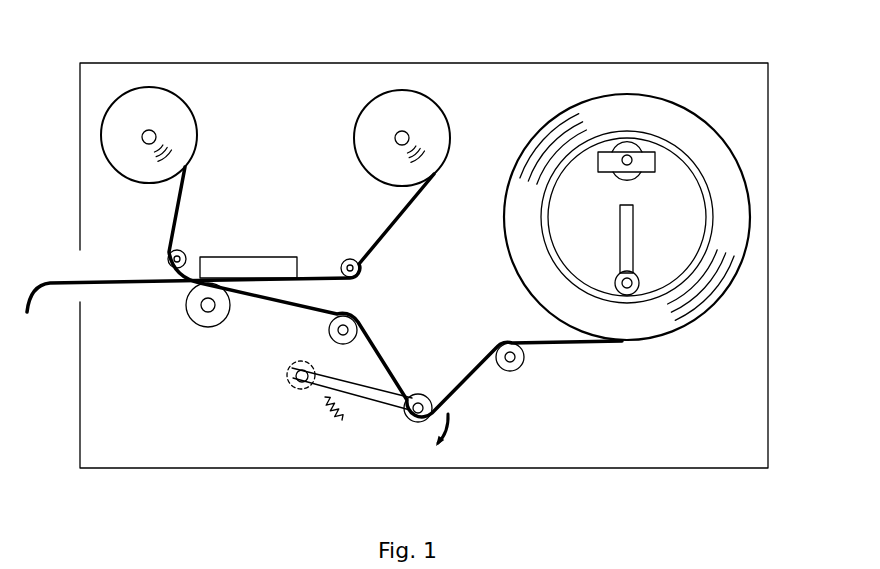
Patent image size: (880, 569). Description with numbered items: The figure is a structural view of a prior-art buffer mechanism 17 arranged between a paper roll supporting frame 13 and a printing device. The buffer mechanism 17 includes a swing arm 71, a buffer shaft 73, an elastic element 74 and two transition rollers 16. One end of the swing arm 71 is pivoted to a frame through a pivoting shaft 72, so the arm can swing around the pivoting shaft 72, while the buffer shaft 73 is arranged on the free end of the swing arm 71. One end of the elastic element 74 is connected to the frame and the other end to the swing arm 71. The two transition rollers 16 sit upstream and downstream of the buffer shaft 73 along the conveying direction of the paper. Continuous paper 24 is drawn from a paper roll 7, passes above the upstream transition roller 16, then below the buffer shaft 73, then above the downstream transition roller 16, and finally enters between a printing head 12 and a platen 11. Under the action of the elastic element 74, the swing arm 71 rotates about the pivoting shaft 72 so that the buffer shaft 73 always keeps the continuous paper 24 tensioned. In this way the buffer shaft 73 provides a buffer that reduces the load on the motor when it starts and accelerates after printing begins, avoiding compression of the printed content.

The paper roll supporting frame 13 is at (590, 78).
The paper roll 7 is at (706, 125).
The continuous paper 24 is at (72, 272).
The printing head 12 is at (222, 257).
The platen 11 is at (196, 324).
The transition rollers 16 is at (330, 325).
The buffer mechanism 17 is at (339, 429).
The swing arm 71 is at (362, 405).
The pivoting shaft 72 is at (294, 371).
The buffer shaft 73 is at (421, 392).
The elastic element 74 is at (325, 408).